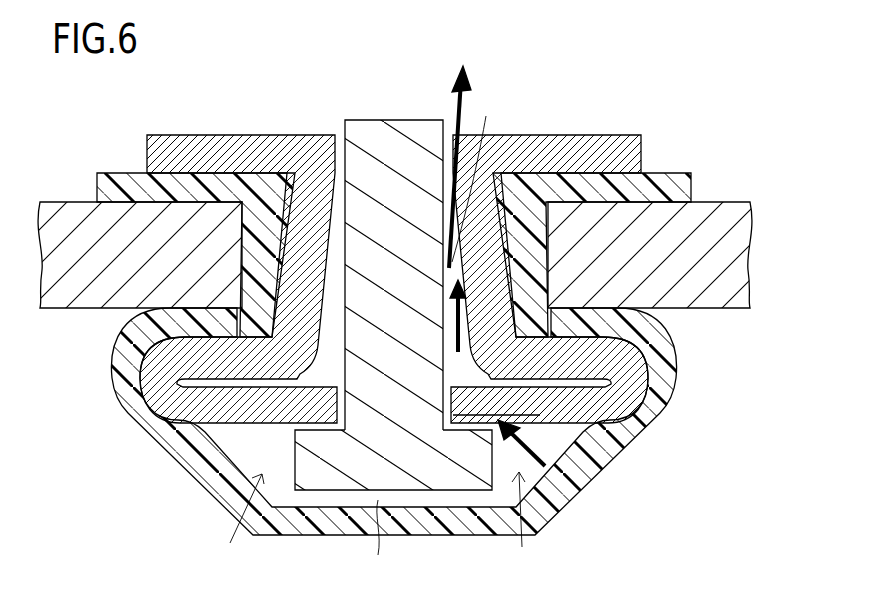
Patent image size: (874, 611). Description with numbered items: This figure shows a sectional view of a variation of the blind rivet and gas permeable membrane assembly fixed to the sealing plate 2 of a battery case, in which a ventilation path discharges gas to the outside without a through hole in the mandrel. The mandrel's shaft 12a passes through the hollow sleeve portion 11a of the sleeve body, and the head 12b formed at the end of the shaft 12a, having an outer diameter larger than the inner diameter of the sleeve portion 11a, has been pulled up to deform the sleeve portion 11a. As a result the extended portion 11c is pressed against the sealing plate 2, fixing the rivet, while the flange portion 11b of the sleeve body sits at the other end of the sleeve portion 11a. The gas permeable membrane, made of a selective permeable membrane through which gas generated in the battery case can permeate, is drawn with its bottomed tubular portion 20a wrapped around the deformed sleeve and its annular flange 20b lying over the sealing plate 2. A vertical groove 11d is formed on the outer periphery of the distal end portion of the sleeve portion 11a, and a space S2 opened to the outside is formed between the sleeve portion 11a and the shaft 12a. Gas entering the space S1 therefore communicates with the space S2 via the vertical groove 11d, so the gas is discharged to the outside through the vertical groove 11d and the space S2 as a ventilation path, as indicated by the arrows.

The sealing plate 2 is at (78, 310).
The sleeve portion 11a is at (583, 428).
The flange portion 11b is at (594, 133).
The extended portion 11c is at (115, 395).
The vertical groove 11d is at (570, 428).
The shaft 12a is at (394, 118).
The head 12b is at (447, 492).
The tubular portion 20a is at (640, 449).
The flange 20b is at (677, 172).
The space S1 is at (377, 509).
The space S2 is at (478, 209).